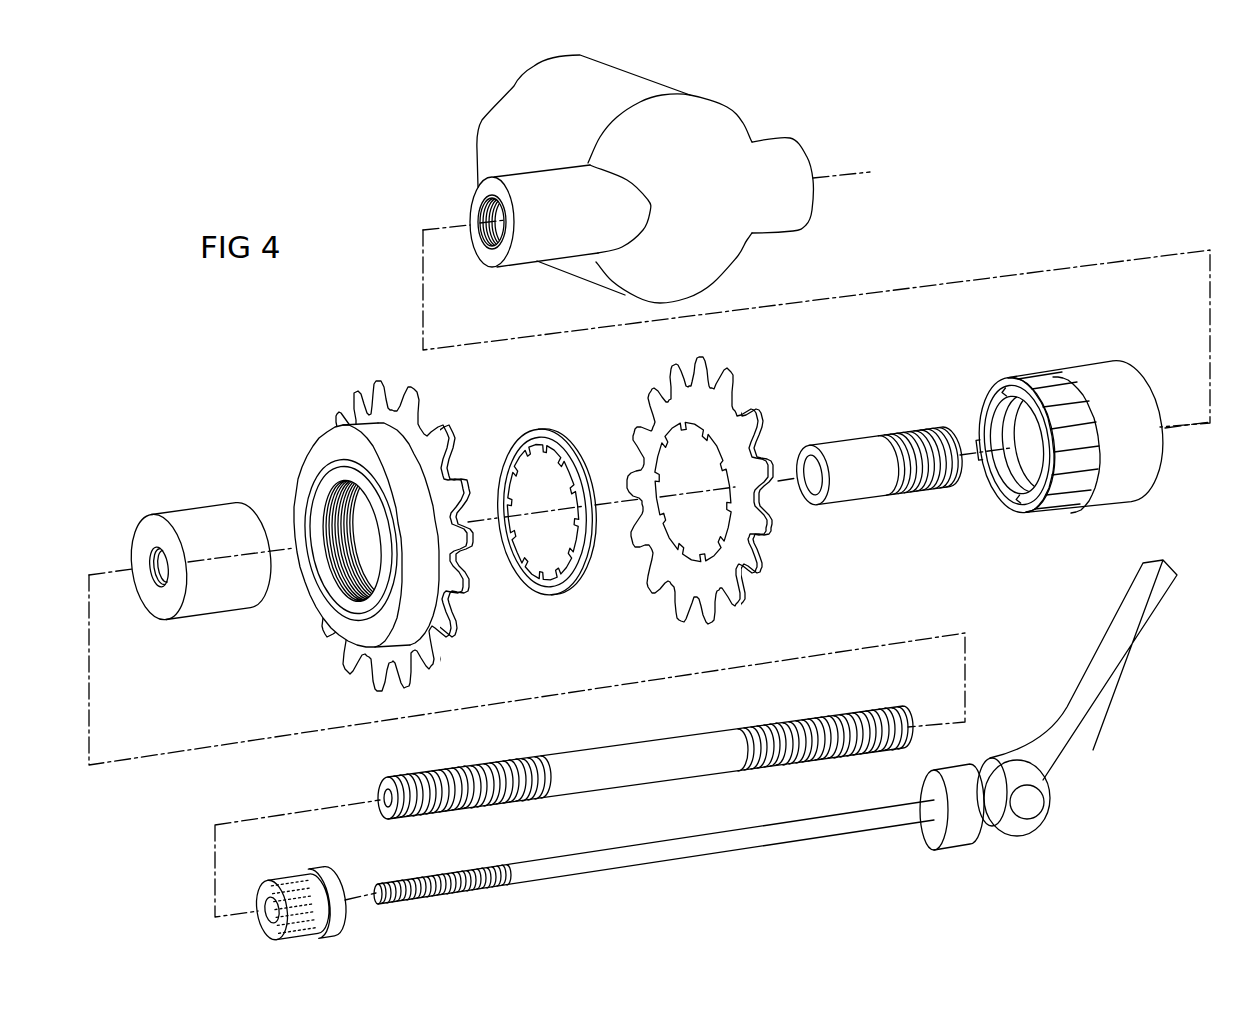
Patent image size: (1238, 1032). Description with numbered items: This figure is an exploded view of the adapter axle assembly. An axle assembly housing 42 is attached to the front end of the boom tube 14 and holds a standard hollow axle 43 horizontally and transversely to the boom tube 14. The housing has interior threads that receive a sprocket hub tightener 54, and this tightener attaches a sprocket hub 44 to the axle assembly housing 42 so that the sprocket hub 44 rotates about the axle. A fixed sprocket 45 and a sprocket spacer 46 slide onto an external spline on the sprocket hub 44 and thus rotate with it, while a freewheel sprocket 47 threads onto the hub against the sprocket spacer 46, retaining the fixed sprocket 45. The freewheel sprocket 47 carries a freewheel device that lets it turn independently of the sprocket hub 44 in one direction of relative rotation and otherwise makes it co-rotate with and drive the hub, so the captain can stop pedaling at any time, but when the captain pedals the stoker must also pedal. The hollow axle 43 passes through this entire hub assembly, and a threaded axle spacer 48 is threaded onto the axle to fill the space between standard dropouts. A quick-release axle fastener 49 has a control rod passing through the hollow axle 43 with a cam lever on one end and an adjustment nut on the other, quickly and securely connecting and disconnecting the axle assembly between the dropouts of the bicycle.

The boom tube 14 is at (570, 120).
The axle assembly housing 42 is at (576, 219).
The hollow axle 43 is at (614, 752).
The sprocket hub 44 is at (1114, 424).
The fixed sprocket 45 is at (735, 402).
The sprocket spacer 46 is at (546, 430).
The freewheel sprocket 47 is at (342, 402).
The threaded axle spacer 48 is at (210, 565).
The quick-release axle fastener 49 is at (823, 830).
The sprocket hub tightener 54 is at (860, 448).